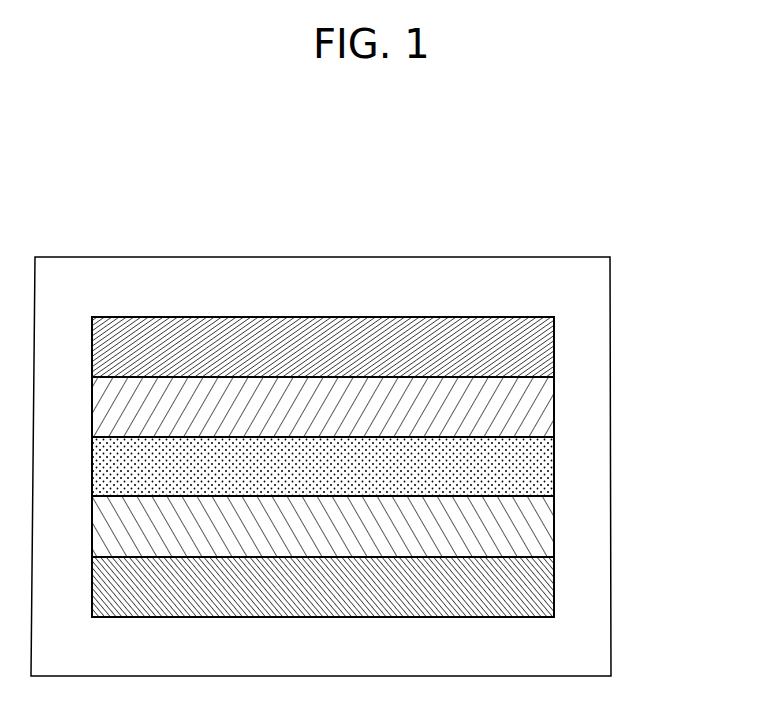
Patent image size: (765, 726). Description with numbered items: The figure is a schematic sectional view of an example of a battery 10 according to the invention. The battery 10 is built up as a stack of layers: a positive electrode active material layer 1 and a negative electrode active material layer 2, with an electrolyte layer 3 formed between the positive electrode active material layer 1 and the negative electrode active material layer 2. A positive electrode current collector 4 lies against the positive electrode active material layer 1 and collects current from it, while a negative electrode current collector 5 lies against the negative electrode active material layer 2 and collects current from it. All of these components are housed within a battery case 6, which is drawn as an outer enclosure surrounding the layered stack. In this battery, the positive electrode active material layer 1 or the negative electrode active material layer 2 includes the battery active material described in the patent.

The battery 10 is at (588, 215).
The battery case 6 is at (572, 300).
The positive electrode current collector 4 is at (520, 355).
The positive electrode active material layer 1 is at (520, 415).
The electrolyte layer 3 is at (520, 475).
The negative electrode active material layer 2 is at (520, 535).
The negative electrode current collector 5 is at (520, 597).